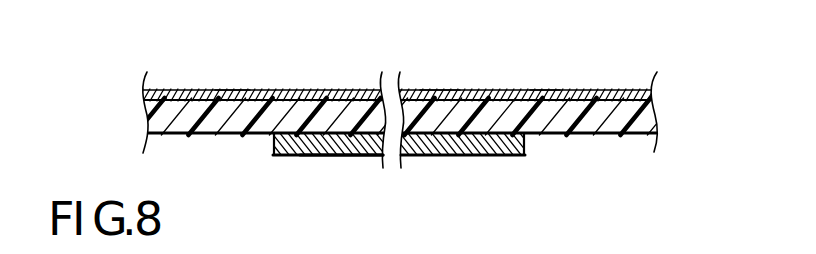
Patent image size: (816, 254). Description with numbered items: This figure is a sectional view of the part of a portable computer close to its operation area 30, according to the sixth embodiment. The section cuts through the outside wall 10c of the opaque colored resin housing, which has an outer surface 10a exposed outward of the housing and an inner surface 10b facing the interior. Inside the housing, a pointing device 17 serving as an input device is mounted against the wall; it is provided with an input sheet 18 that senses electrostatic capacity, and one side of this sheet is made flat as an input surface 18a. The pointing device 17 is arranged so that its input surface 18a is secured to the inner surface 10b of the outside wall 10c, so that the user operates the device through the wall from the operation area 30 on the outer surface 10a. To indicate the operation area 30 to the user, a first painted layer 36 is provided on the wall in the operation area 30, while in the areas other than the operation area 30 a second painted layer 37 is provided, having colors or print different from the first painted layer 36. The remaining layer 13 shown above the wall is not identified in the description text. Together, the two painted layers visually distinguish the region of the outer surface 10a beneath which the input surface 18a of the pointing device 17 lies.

The surface layer 13 is at (178, 90).
The second painted layer 37 is at (233, 90).
The operation area 30 is at (320, 90).
The first painted layer 36 is at (442, 90).
The outer surface 10a is at (640, 90).
The inner surface 10b is at (609, 134).
The outside wall 10c is at (653, 110).
The pointing device 17 is at (293, 134).
The input sheet 18 is at (353, 134).
The input surface 18a is at (472, 134).